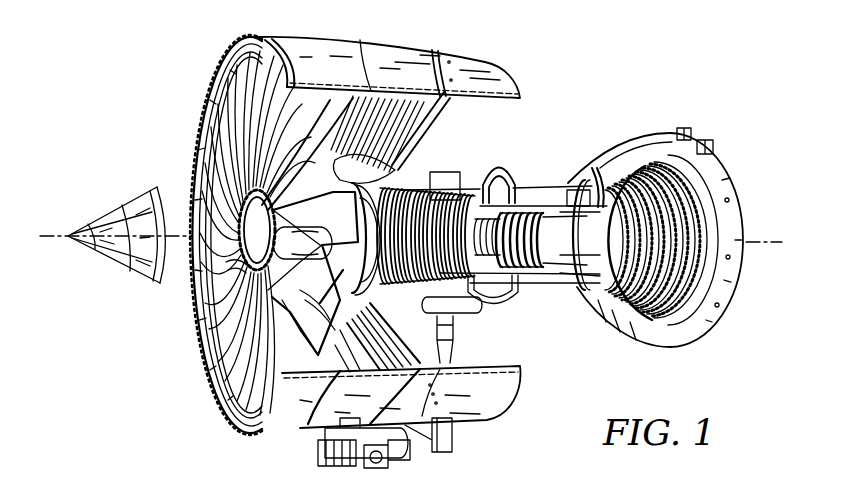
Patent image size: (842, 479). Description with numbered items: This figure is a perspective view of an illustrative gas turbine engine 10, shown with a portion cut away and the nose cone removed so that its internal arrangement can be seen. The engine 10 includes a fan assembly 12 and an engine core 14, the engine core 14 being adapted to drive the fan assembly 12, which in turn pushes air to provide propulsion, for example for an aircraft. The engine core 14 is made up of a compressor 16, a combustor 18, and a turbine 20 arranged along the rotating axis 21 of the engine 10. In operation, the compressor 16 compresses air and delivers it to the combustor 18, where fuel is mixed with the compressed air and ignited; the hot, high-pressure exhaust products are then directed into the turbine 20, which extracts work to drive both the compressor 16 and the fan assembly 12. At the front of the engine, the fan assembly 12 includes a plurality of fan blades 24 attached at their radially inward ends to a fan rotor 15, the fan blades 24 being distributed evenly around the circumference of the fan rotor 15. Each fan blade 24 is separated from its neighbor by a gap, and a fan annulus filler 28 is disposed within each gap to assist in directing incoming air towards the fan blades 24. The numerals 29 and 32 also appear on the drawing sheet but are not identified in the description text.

The gas turbine engine 10 is at (163, 58).
The fan assembly 12 is at (218, 382).
The engine core 14 is at (599, 79).
The fan rotor 15 is at (233, 267).
The compressor 16 is at (433, 185).
The combustor 18 is at (567, 286).
The turbine 20 is at (630, 167).
The rotating axis 21 is at (44, 236).
The fan blades 24 is at (312, 283).
The fan annulus filler 28 is at (247, 192).
The shaft 29 is at (580, 478).
The nacelle 32 is at (537, 471).